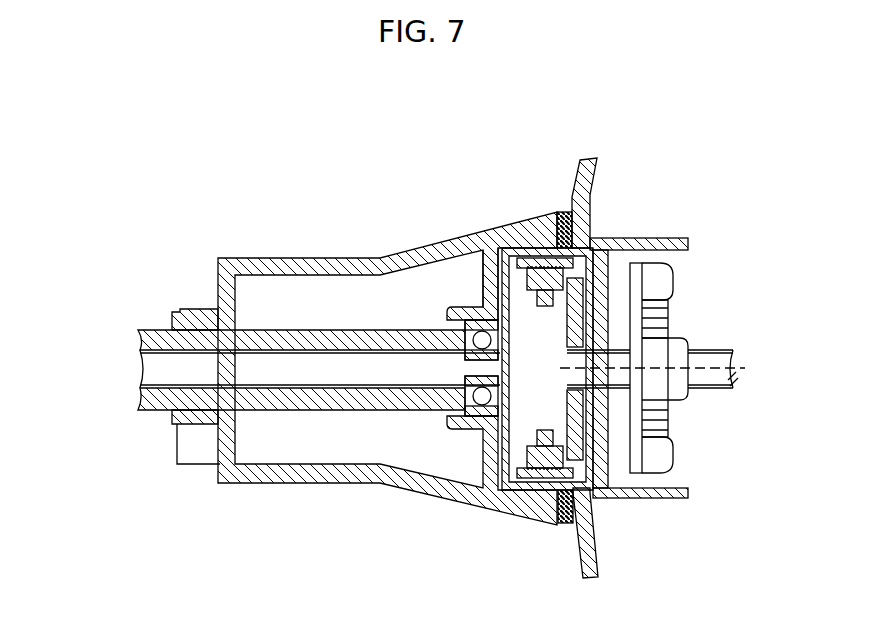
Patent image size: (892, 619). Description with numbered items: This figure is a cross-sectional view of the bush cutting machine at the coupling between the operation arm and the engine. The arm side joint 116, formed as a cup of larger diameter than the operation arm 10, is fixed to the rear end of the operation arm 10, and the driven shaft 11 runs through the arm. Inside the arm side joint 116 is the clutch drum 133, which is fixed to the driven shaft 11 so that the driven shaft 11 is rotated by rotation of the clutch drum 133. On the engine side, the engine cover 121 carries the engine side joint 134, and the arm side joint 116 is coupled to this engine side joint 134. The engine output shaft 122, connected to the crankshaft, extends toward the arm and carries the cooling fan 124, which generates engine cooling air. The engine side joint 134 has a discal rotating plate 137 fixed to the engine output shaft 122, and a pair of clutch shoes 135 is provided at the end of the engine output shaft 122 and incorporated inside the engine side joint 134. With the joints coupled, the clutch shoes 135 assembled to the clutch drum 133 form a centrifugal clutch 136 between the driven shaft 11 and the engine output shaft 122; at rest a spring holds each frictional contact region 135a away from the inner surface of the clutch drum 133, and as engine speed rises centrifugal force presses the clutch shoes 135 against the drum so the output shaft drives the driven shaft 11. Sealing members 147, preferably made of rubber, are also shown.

The operation arm 10 is at (158, 329).
The driven shaft 11 is at (142, 366).
The arm side joint 116 is at (298, 256).
The engine cover 121 is at (589, 185).
The engine output shaft 122 is at (729, 372).
The cooling fan 124 is at (672, 283).
The clutch drum 133 is at (496, 234).
The engine side joint 134 is at (596, 498).
The clutch shoes 135 is at (578, 290).
The frictional contact region 135a is at (545, 262).
The centrifugal clutch 136 is at (518, 486).
The rotating plate 137 is at (606, 458).
The sealing member 147 is at (565, 210).